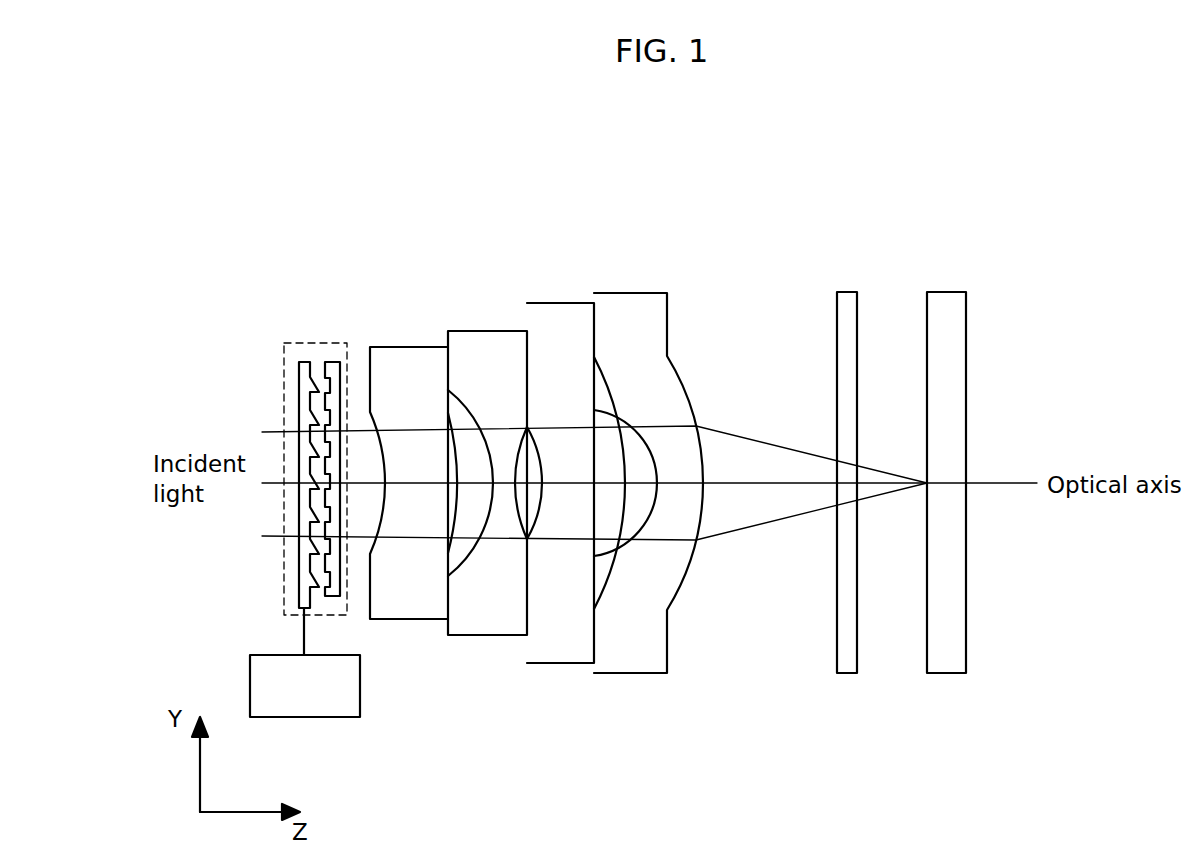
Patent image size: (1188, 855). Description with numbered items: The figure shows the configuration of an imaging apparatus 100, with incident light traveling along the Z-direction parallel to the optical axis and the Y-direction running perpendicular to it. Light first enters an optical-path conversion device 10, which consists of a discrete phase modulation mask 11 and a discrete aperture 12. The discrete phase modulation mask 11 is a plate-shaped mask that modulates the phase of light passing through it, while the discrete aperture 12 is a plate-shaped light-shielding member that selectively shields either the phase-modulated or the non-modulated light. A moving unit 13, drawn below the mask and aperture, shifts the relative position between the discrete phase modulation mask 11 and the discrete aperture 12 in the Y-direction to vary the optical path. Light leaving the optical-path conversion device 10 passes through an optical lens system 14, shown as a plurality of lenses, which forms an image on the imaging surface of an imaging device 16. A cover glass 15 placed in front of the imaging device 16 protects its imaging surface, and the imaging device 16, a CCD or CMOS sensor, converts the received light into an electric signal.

The imaging apparatus 100 is at (655, 216).
The optical-path conversion device 10 is at (290, 342).
The discrete phase modulation mask 11 is at (303, 360).
The discrete aperture 12 is at (332, 360).
The moving unit 13 is at (323, 718).
The optical lens system 14 is at (675, 675).
The cover glass 15 is at (848, 673).
The imaging device 16 is at (948, 673).